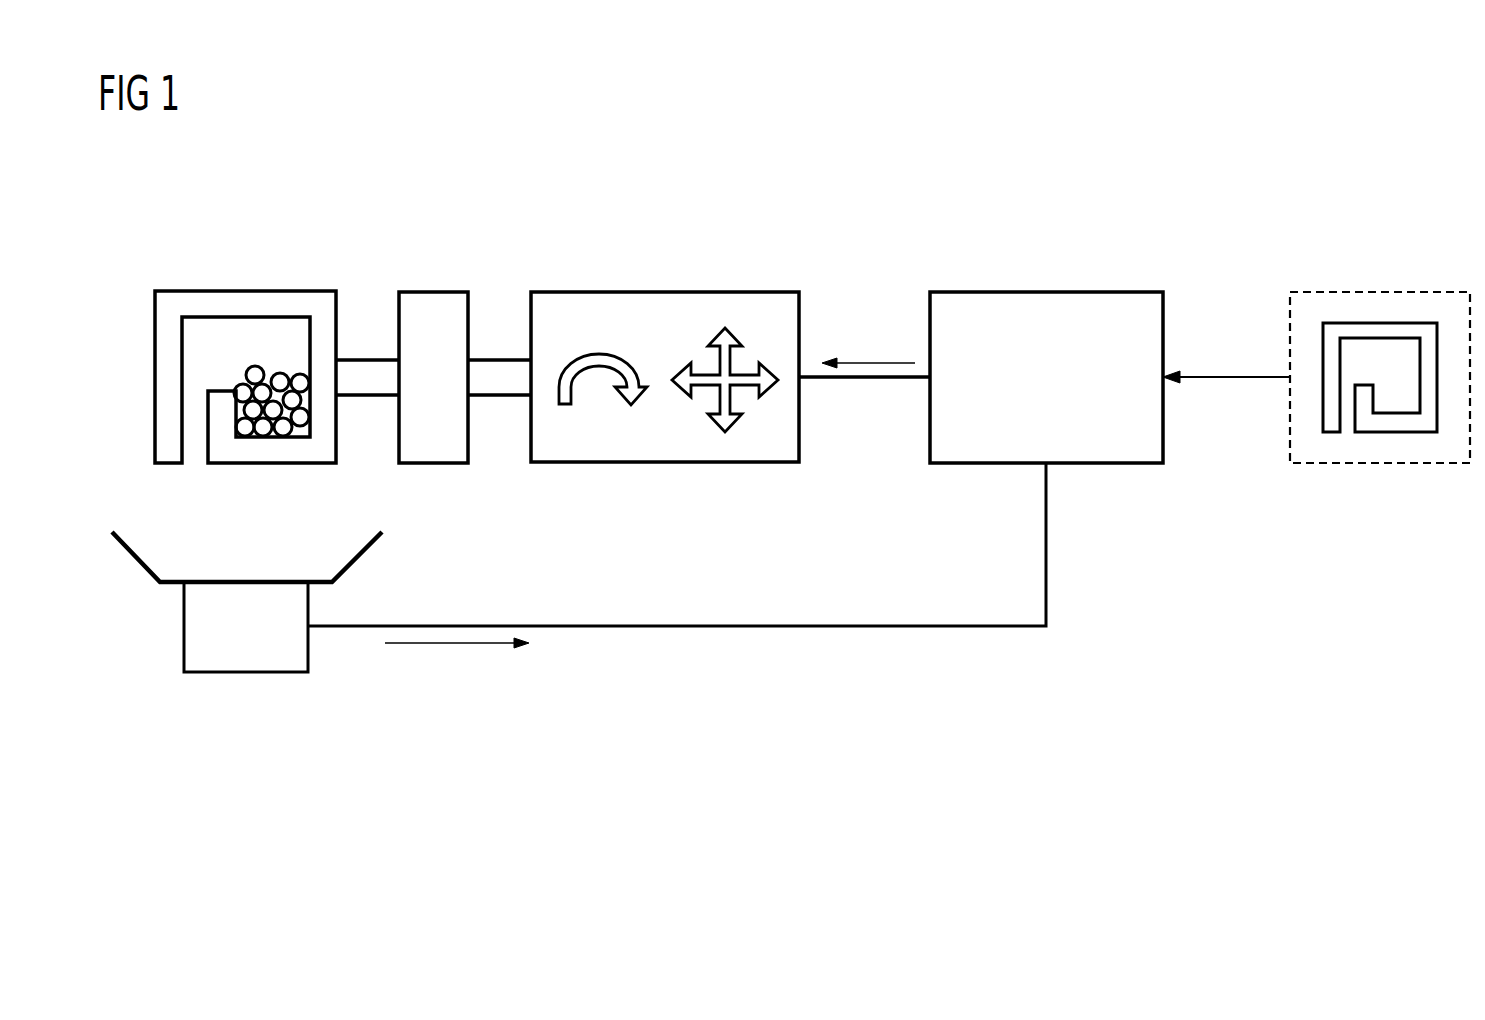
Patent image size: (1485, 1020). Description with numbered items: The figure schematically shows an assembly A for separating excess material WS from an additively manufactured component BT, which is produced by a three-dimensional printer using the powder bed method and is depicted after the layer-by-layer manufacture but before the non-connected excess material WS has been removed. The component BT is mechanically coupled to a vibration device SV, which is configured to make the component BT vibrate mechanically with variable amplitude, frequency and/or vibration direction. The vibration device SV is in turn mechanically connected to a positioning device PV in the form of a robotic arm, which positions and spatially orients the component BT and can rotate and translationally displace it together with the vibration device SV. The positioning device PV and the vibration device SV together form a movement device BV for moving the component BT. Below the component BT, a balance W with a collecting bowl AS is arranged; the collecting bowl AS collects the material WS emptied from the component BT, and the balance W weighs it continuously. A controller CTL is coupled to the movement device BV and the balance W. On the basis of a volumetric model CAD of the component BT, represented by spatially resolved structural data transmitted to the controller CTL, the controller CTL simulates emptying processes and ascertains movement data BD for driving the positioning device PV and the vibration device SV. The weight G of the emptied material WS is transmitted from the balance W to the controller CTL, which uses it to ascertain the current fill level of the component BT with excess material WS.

The assembly A is at (1069, 191).
The component BT is at (226, 291).
The excess material WS is at (278, 376).
The vibration device SV is at (433, 377).
The movement device BV is at (802, 283).
The positioning device PV is at (665, 377).
The movement data BD is at (868, 350).
The controller CTL is at (1046, 377).
The volumetric model CAD is at (1383, 292).
The collecting bowl AS is at (138, 553).
The balance W is at (246, 627).
The weight G is at (457, 659).